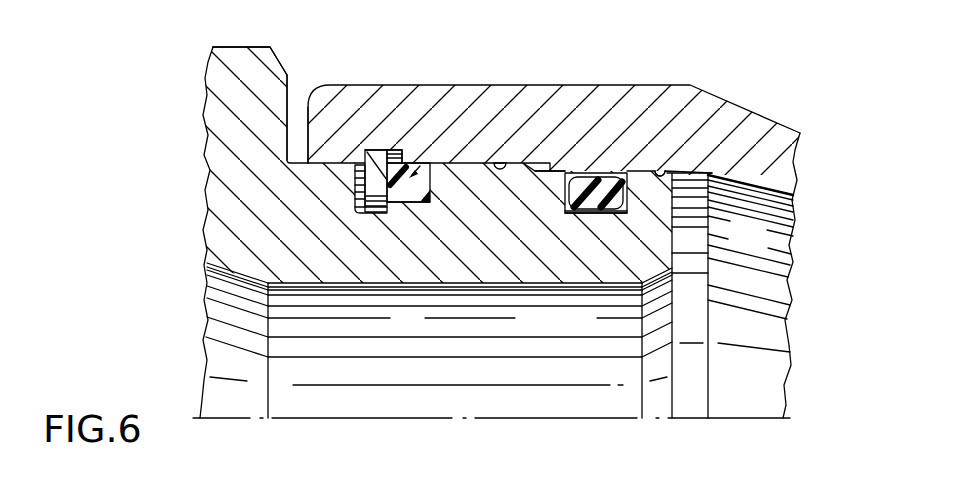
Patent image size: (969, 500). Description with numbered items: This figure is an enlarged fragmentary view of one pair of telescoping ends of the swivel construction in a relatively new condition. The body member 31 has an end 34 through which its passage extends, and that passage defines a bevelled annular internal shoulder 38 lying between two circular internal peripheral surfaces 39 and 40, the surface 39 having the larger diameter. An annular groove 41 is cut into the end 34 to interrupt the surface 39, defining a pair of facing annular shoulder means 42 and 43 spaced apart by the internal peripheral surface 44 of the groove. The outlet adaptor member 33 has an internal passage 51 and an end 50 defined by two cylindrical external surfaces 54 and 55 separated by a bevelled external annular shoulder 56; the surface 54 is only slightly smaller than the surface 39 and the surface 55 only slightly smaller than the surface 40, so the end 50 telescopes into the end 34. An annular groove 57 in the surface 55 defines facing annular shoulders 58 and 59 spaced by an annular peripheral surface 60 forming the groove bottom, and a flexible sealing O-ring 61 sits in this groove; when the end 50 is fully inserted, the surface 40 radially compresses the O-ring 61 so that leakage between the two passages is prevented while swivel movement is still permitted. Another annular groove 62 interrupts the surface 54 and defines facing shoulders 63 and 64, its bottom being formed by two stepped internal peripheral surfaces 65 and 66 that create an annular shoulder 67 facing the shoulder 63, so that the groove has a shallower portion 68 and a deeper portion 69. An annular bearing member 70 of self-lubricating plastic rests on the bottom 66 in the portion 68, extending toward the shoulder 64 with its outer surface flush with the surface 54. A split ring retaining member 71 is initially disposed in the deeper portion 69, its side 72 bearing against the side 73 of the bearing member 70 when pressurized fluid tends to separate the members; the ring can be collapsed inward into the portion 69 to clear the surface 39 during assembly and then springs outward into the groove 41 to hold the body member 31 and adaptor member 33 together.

The body member 31 is at (760, 132).
The outlet adaptor member 33 is at (222, 82).
The end of body member 34 is at (310, 96).
The bevelled annular internal shoulder 38 is at (566, 172).
The internal peripheral surface 39 is at (505, 162).
The internal peripheral surface 40 is at (661, 171).
The annular groove 41 is at (393, 150).
The annular shoulder means 42 is at (337, 112).
The annular shoulder means 43 is at (414, 164).
The internal peripheral surface of groove 44 is at (371, 150).
The end of outlet adaptor member 50 is at (708, 270).
The internal passage 51 is at (205, 283).
The external surface 54 is at (498, 162).
The external surface 55 is at (634, 171).
The bevelled external annular shoulder 56 is at (532, 168).
The annular groove 57 is at (586, 216).
The annular shoulder 58 is at (552, 172).
The annular shoulder 59 is at (795, 243).
The annular peripheral surface 60 is at (596, 214).
The sealing O-ring 61 is at (597, 174).
The annular groove 62 is at (400, 204).
The annular facing shoulder 63 is at (352, 198).
The annular facing shoulder 64 is at (432, 180).
The internal peripheral surface 65 is at (368, 215).
The internal peripheral surface 66 is at (430, 200).
The annular shoulder 67 is at (378, 215).
The groove portion 68 is at (408, 170).
The groove portion 69 is at (350, 184).
The annular bearing member 70 is at (402, 152).
The split ring retaining member 71 is at (364, 150).
The side of retaining member 72 is at (415, 204).
The side of bearing member 73 is at (356, 170).